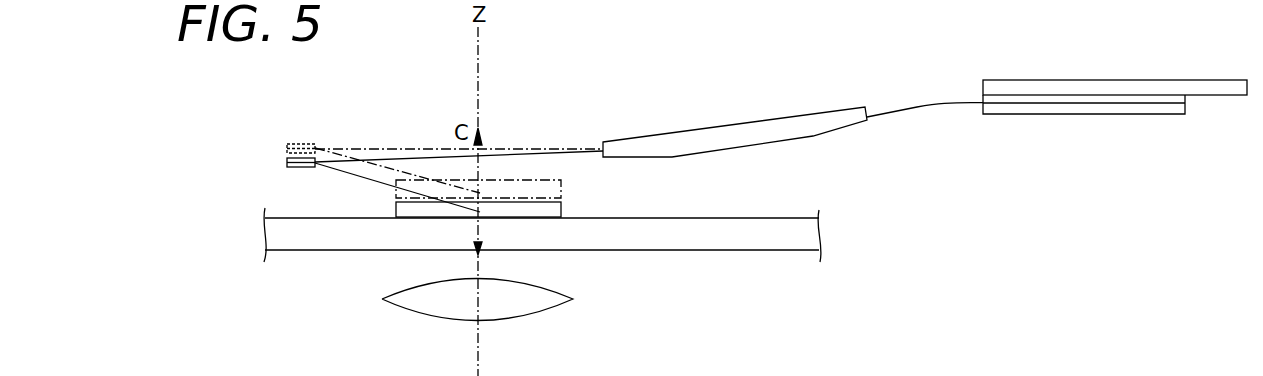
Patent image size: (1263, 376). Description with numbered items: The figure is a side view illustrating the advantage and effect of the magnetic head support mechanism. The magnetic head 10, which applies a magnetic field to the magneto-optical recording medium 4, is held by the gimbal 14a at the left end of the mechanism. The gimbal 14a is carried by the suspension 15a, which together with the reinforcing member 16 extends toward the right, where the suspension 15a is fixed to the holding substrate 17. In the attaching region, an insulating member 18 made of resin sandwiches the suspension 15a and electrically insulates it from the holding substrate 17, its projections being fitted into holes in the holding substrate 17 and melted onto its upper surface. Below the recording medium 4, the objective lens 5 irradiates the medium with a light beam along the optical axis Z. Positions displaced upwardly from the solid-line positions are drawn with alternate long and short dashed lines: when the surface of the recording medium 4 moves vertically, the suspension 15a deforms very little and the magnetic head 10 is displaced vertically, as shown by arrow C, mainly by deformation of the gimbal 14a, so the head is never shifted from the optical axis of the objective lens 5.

The magneto-optical recording medium 4 is at (770, 243).
The objective lens 5 is at (528, 313).
The magnetic head 10 is at (427, 209).
The gimbal 14a is at (400, 153).
The suspension 15a is at (918, 102).
The reinforcing member 16 is at (755, 130).
The holding substrate 17 is at (1033, 85).
The insulating member 18 is at (1157, 99).